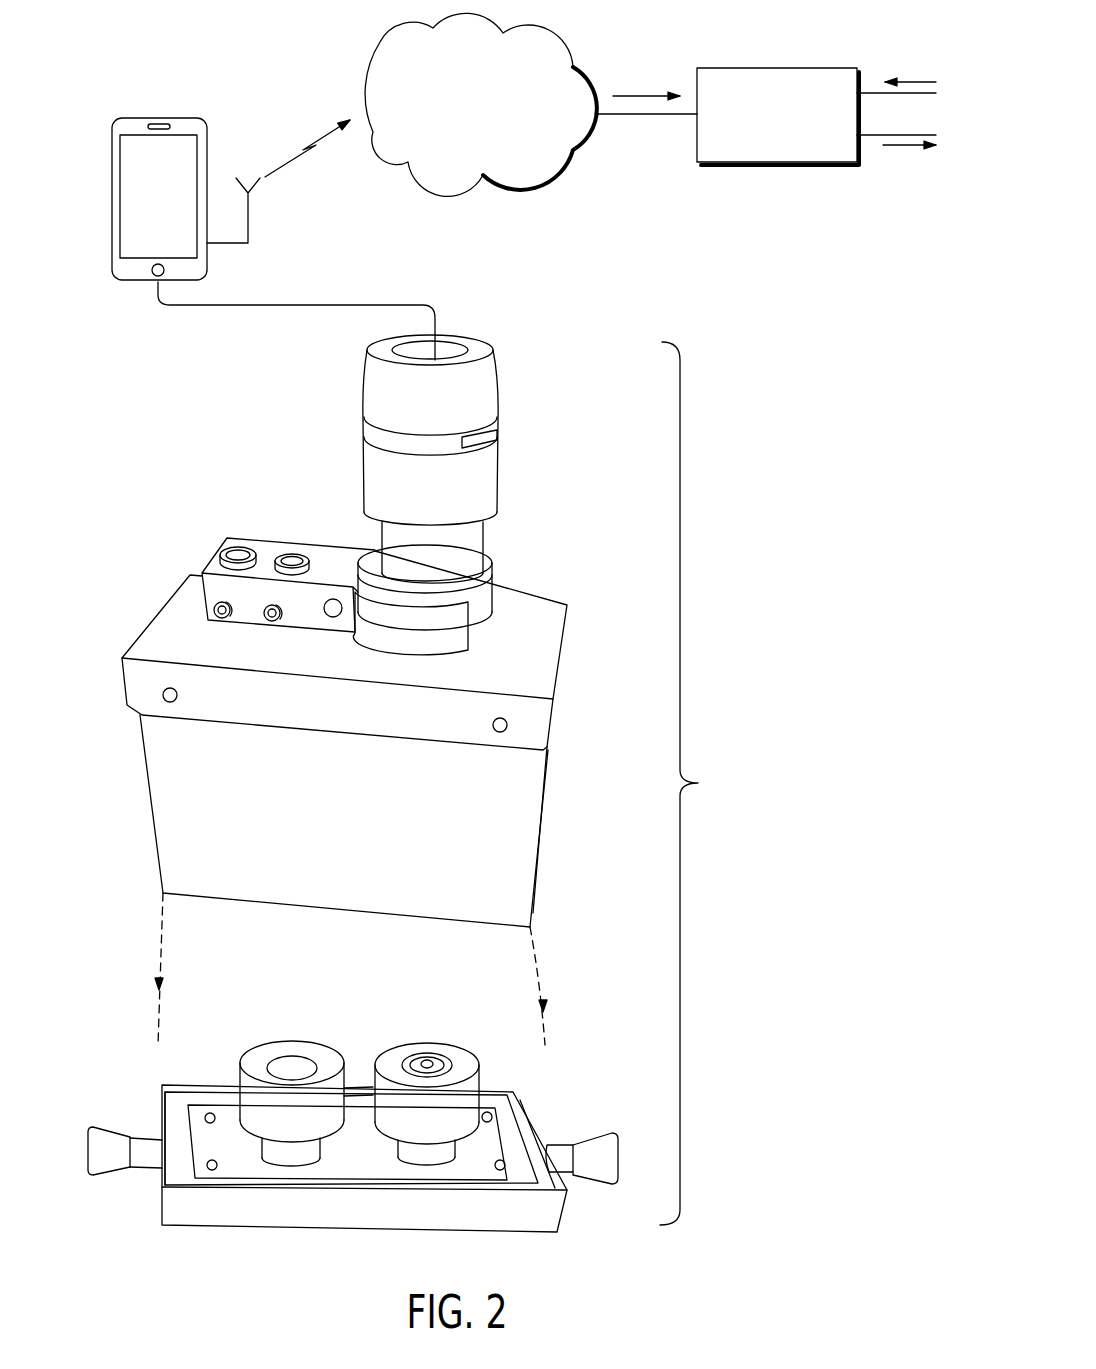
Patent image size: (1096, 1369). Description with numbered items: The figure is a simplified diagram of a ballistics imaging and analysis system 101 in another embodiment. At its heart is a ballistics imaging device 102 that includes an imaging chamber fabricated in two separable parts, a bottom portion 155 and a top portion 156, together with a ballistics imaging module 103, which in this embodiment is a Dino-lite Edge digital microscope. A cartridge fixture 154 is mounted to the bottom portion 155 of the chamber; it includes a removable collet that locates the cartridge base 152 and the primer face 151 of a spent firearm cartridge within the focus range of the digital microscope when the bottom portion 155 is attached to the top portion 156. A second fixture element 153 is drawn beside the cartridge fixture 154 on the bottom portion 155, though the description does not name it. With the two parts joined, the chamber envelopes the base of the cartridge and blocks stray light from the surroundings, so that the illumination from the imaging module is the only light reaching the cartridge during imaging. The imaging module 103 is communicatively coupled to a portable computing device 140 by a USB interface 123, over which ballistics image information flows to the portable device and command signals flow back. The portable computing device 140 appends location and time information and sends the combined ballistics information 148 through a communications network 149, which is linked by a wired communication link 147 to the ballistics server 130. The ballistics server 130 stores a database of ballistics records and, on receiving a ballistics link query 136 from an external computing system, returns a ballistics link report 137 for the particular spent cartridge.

The ballistics imaging and analysis system 101 is at (100, 30).
The ballistics imaging device 102 is at (432, 783).
The ballistics imaging module 103 is at (362, 472).
The USB interface 123 is at (163, 302).
The ballistics server 130 is at (777, 68).
The ballistics link query 136 is at (917, 80).
The ballistics link report 137 is at (902, 148).
The portable computing device 140 is at (112, 197).
The wired communication link 147 is at (250, 215).
The combined ballistics information 148 is at (317, 138).
The communications network 149 is at (388, 43).
The primer face 151 is at (425, 1058).
The cartridge base 152 is at (430, 1058).
The cartridge holder 153 is at (450, 1063).
The cartridge fixture 154 is at (375, 1073).
The bottom portion of the imaging chamber 155 is at (162, 1210).
The top portion of the imaging chamber 156 is at (150, 804).